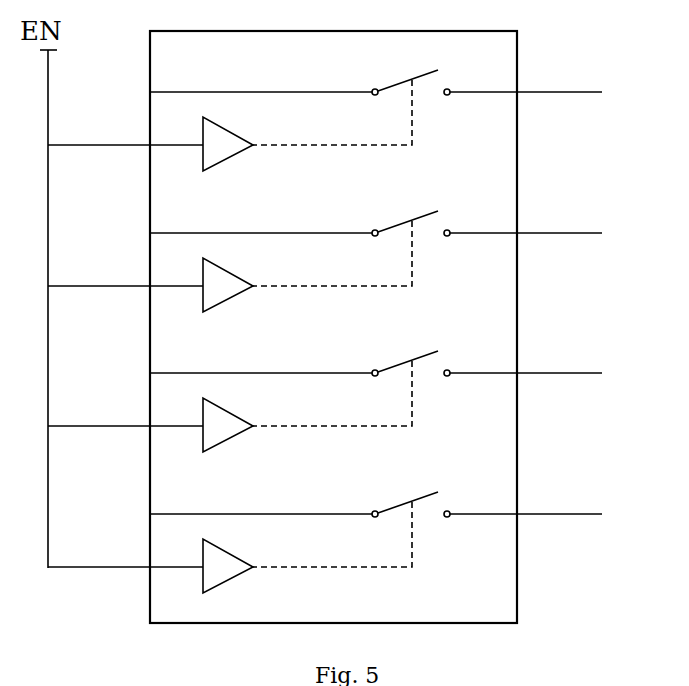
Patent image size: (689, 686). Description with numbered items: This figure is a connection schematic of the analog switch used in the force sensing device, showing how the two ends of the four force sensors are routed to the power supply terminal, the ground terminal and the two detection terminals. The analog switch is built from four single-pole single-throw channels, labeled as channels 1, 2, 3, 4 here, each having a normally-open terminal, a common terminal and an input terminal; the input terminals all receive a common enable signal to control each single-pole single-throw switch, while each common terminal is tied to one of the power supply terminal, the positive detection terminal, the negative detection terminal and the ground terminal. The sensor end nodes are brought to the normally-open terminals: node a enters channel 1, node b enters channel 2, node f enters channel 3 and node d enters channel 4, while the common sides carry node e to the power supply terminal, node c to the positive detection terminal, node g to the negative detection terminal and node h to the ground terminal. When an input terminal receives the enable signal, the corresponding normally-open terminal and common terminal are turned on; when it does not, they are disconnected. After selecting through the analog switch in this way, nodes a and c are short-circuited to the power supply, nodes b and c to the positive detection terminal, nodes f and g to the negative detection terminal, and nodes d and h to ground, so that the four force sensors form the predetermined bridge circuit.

The switch channel 1 (NO1/IN1/COM1) 1 is at (351, 108).
The switch channel 2 (NO2/IN2/COM2) 2 is at (341, 249).
The switch channel 3 (NO3/IN3/COM3) 3 is at (341, 389).
The switch channel 4 (NO4/IN4/COM4) 4 is at (354, 530).
The node a is at (248, 92).
The node b is at (248, 233).
The node c is at (526, 222).
The node d is at (248, 514).
The node e is at (526, 81).
The node f is at (248, 373).
The node g is at (526, 362).
The node h is at (526, 503).